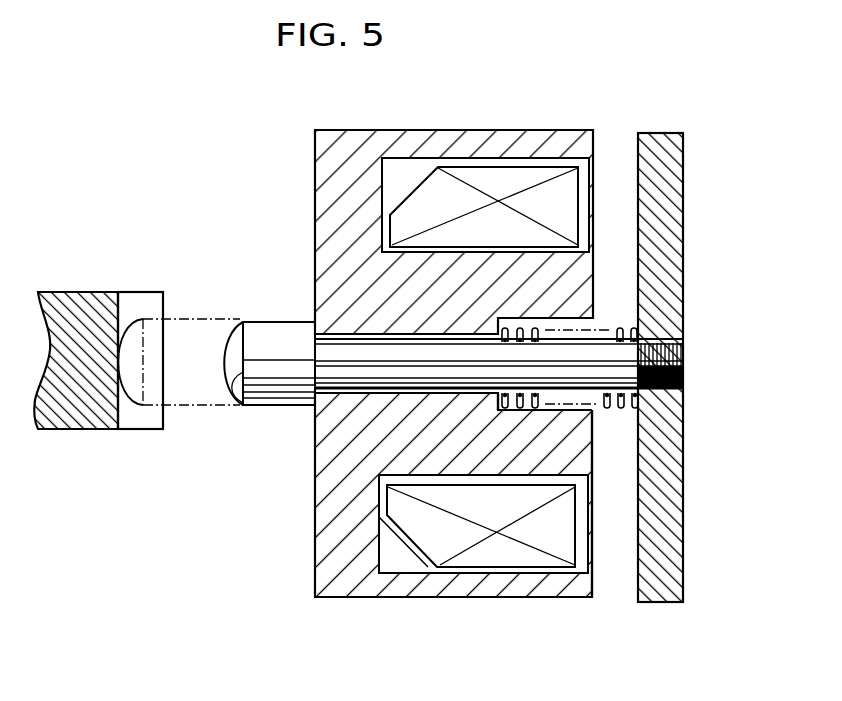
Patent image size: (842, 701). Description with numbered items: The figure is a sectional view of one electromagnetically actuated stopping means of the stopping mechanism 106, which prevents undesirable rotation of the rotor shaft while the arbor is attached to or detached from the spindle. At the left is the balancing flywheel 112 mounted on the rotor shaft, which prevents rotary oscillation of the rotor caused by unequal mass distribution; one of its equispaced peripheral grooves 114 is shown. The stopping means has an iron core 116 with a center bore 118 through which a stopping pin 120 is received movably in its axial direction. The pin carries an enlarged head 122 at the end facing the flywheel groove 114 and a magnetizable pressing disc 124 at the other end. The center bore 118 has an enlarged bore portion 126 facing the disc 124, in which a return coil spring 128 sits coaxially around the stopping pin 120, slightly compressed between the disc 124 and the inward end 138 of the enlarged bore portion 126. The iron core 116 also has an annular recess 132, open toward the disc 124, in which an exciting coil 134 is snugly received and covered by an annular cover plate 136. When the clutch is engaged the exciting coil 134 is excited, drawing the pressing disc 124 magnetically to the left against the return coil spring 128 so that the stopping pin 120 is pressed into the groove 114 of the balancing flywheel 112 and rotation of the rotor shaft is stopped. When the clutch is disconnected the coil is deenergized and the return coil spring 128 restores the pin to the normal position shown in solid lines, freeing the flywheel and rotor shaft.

The stopping mechanism 106 is at (503, 130).
The balancing flywheel 112 is at (72, 292).
The groove 114 is at (142, 292).
The iron core 116 is at (350, 597).
The center bore 118 is at (357, 337).
The stopping pin 120 is at (352, 372).
The enlarged head 122 is at (250, 323).
The pressing disc 124 is at (684, 520).
The enlarged bore portion 126 is at (560, 410).
The return coil spring 128 is at (621, 327).
The annular recess 132 is at (418, 170).
The exciting coil 134 is at (484, 557).
The annular cover plate 136 is at (593, 550).
The inward end 138 is at (493, 413).